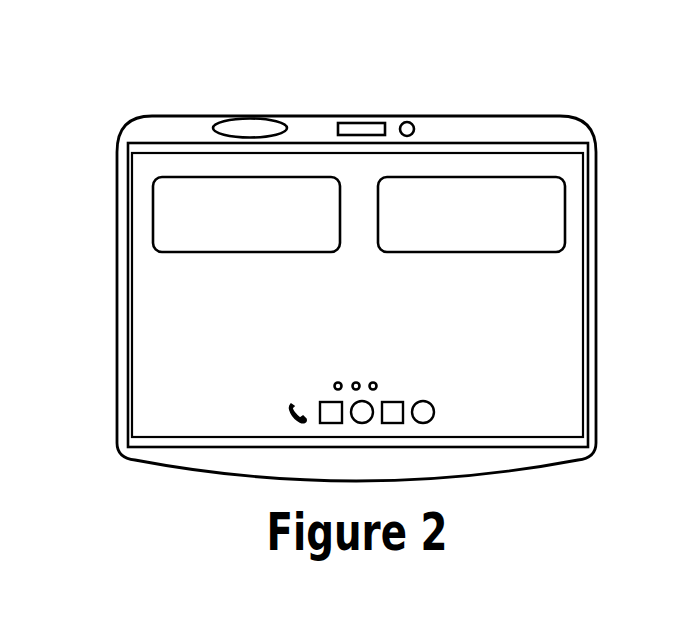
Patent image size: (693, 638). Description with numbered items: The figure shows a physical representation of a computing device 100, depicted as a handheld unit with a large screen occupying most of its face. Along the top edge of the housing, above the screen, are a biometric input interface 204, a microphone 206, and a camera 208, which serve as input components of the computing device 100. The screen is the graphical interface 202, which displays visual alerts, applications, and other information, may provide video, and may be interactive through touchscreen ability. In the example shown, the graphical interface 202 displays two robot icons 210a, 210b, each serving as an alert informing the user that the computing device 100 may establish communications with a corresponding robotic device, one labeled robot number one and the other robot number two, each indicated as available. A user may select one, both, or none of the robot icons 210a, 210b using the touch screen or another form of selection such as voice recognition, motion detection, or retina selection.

The computing device 100 is at (351, 256).
The graphical interface 202 is at (118, 288).
The biometric input interface 204 is at (282, 122).
The microphone 206 is at (382, 123).
The camera 208 is at (415, 128).
The robot icon 210a is at (153, 205).
The robot icon 210b is at (566, 213).